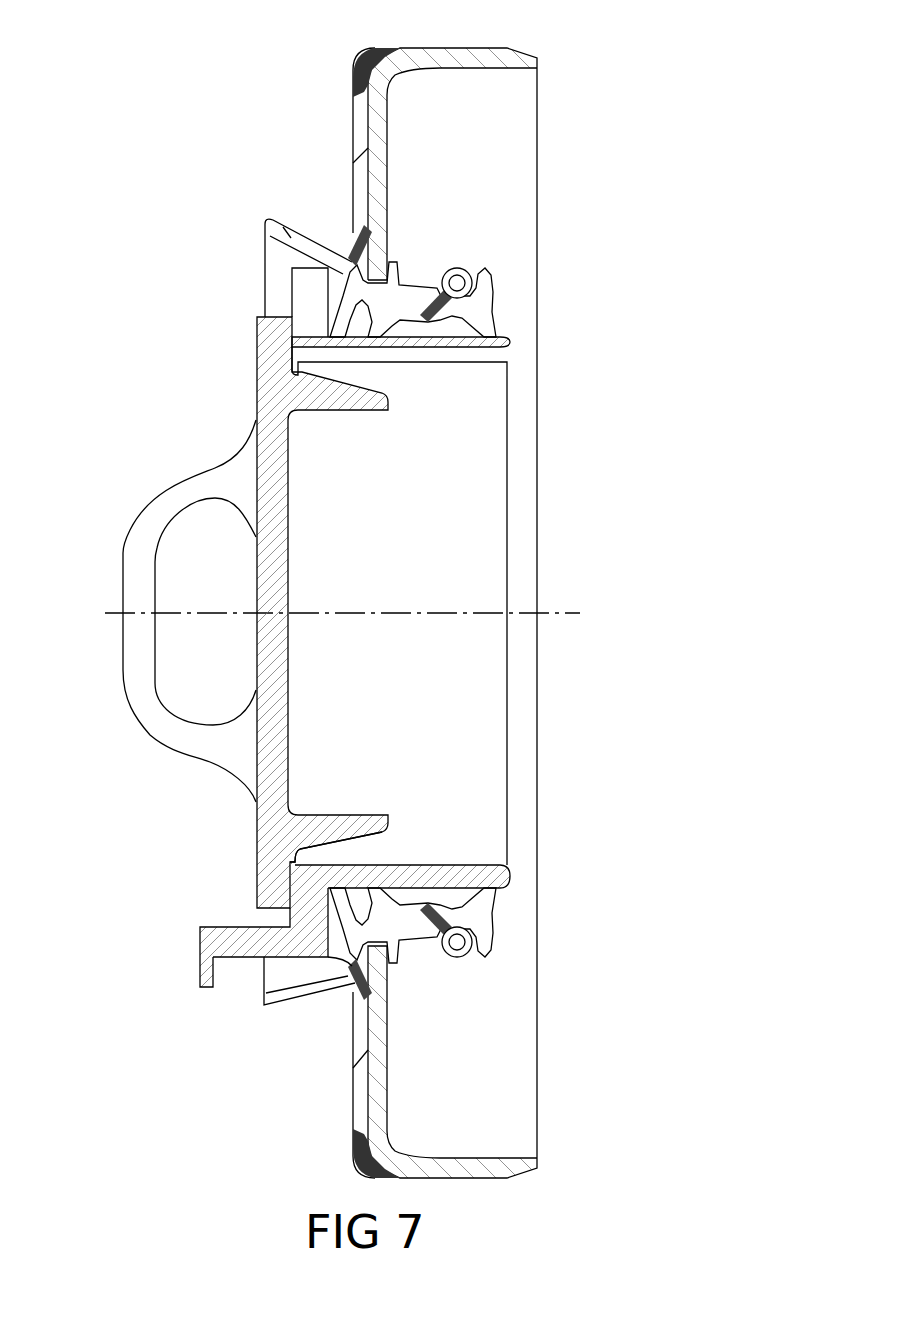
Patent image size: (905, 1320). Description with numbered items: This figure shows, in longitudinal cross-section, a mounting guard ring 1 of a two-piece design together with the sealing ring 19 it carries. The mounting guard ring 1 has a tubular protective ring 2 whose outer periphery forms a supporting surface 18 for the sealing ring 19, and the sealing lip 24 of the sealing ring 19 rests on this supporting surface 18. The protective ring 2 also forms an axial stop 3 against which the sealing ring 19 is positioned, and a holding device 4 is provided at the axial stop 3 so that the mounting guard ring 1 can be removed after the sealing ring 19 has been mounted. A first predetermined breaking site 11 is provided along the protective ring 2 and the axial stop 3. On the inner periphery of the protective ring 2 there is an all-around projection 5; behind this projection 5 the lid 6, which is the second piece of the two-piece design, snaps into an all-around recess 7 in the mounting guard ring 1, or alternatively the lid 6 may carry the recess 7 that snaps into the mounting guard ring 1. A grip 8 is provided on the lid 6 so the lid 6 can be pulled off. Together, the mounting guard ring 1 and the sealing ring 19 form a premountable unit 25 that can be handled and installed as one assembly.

The mounting guard ring 1 is at (146, 733).
The tubular protective ring 2 is at (483, 872).
The axial stop 3 is at (305, 918).
The holding device 4 is at (243, 952).
The all-around projection 5 is at (298, 857).
The lid 6 is at (264, 392).
The all-around recess 7 is at (294, 845).
The grip 8 is at (133, 583).
The first predetermined breaking site 11 is at (302, 288).
The supporting surface 18 is at (491, 330).
The sealing ring 19 is at (475, 53).
The sealing lip 24 is at (471, 325).
The premountable unit 25 is at (502, 894).